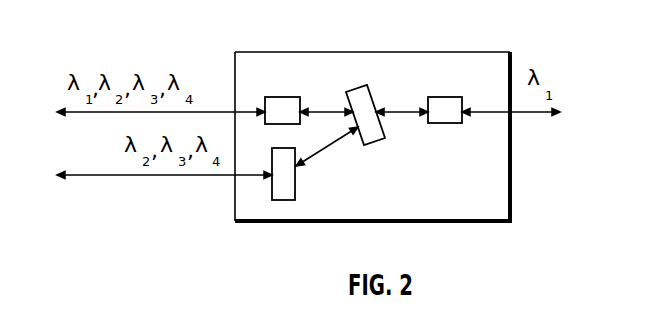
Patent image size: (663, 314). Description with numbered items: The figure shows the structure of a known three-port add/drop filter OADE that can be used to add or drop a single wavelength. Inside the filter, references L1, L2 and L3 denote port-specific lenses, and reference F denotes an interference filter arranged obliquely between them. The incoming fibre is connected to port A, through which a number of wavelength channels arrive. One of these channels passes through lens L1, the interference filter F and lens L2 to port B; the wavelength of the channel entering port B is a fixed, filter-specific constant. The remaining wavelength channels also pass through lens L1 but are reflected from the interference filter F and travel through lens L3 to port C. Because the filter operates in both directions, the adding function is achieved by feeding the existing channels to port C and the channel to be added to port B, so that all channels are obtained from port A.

The three-port add/drop filter OADE is at (362, 52).
The port-specific lens L1 is at (282, 97).
The port-specific lens L2 is at (445, 97).
The port-specific lens L3 is at (296, 187).
The interference filter F is at (358, 89).
The port A is at (248, 93).
The port B is at (494, 90).
The port C is at (248, 158).